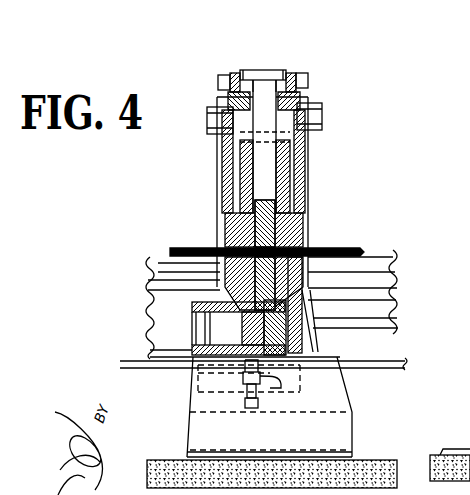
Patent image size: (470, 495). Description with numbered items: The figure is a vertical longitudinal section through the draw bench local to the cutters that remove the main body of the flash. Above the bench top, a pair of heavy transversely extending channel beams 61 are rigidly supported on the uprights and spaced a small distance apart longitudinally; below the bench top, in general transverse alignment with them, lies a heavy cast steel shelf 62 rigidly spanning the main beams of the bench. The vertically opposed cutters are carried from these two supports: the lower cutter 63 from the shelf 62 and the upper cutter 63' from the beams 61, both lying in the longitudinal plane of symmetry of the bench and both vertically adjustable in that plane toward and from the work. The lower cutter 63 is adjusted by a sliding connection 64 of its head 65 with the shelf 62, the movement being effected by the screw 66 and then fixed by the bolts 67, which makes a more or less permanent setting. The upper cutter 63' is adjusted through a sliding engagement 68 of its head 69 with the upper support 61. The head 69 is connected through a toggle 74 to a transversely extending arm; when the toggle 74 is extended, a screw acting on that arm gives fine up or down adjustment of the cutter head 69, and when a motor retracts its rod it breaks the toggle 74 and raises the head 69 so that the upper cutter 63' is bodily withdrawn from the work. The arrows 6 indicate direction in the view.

The toggle 74 is at (265, 93).
The head 69 is at (193, 137).
The channel beams 61 is at (310, 147).
The sliding engagement 68 is at (300, 156).
The lower cutter 63 is at (226, 240).
The upper cutter 63' is at (225, 266).
The direction arrows 6 is at (326, 278).
The shelf 62 is at (203, 320).
The bolts 67 is at (300, 306).
The head 65 is at (292, 322).
The sliding connection 64 is at (302, 357).
The screw 66 is at (243, 407).